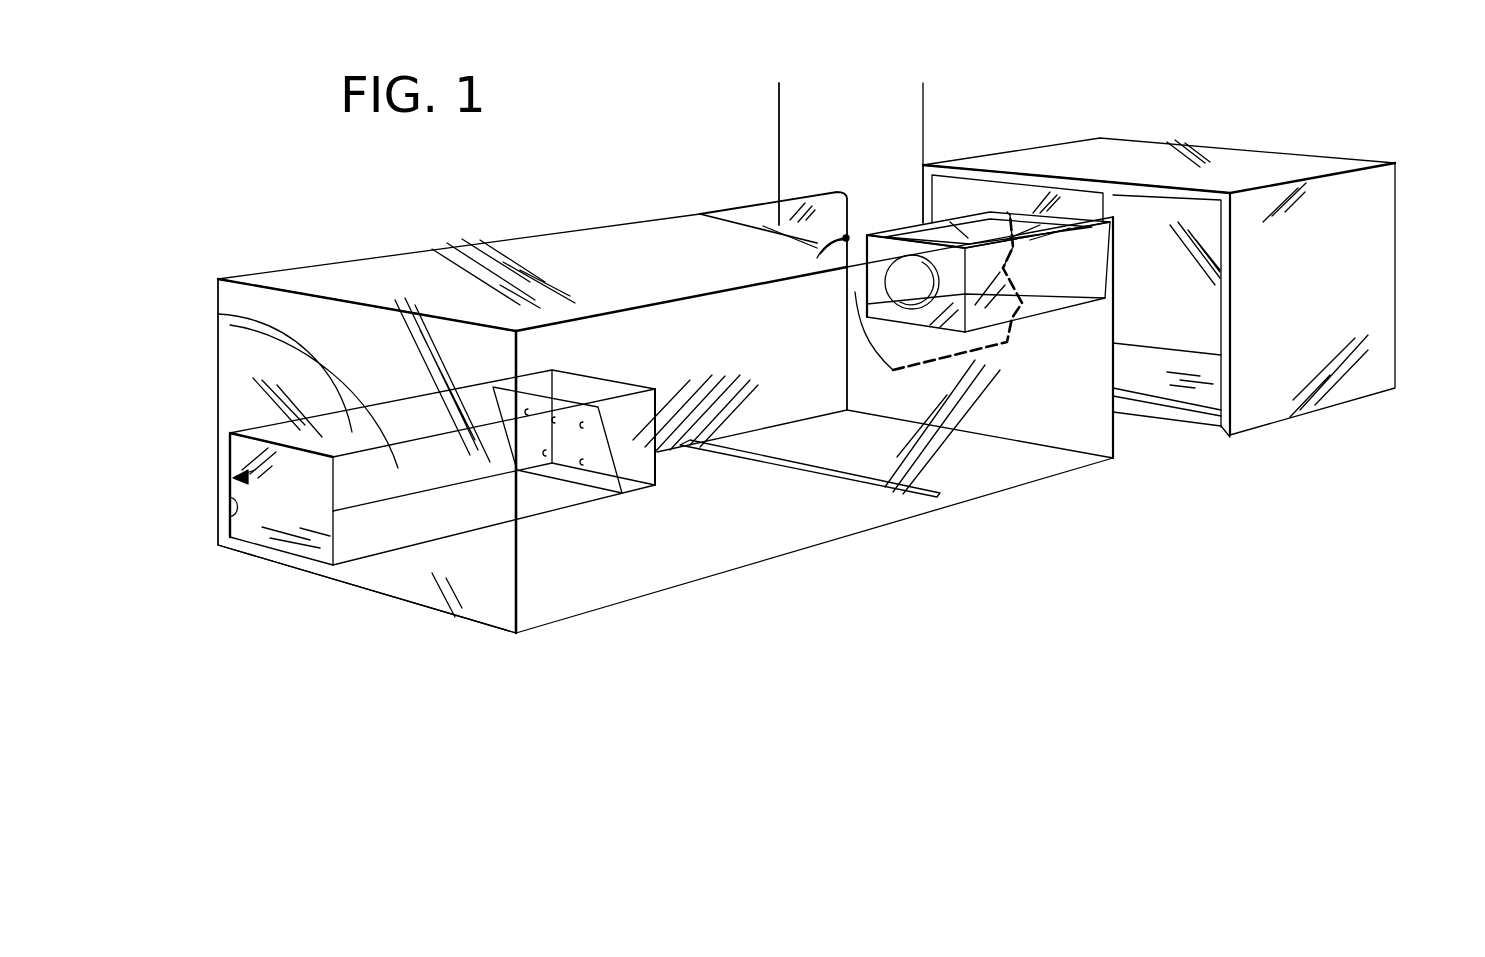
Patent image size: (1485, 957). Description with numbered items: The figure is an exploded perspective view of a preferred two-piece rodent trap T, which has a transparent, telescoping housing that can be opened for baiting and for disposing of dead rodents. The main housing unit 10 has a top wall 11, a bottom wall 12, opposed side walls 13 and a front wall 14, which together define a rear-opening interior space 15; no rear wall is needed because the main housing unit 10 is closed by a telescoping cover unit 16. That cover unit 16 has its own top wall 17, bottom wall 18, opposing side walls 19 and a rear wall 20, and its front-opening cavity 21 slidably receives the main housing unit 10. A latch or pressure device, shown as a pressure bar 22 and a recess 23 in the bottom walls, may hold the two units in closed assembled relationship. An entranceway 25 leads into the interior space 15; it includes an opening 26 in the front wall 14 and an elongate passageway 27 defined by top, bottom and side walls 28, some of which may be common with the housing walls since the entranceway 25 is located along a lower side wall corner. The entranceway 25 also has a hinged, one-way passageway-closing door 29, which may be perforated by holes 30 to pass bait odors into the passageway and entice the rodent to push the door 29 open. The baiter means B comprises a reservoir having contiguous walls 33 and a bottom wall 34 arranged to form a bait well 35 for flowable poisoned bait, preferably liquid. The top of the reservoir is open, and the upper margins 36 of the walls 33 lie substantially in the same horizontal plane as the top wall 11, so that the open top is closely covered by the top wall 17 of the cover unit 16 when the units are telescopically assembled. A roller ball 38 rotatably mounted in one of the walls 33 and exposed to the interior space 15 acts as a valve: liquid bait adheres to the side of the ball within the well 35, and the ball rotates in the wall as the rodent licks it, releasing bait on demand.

The main housing unit 10 is at (623, 212).
The top wall 11 is at (361, 269).
The bottom wall 12 is at (397, 580).
The side walls 13 is at (970, 468).
The front wall 14 is at (238, 375).
The interior space 15 is at (1050, 412).
The telescoping cover unit 16 is at (1376, 154).
The top wall 17 is at (1247, 163).
The bottom wall 18 is at (1212, 395).
The side walls 19 is at (967, 187).
The rear wall 20 is at (1138, 207).
The front-opening cavity 21 is at (1180, 308).
The pressure bar 22 is at (1180, 405).
The recess 23 is at (921, 497).
The entranceway 25 is at (295, 497).
The opening 26 is at (227, 513).
The elongate passageway 27 is at (233, 478).
The passageway walls 28 is at (218, 314).
The door 29 is at (597, 483).
The holes 30 is at (587, 428).
The side walls 33 is at (820, 252).
The bottom wall 34 is at (1040, 298).
The bait well 35 is at (1013, 217).
The upper margins 36 is at (907, 230).
The roller ball 38 is at (885, 300).
The rodent trap T is at (798, 134).
The baiter means B is at (1005, 208).